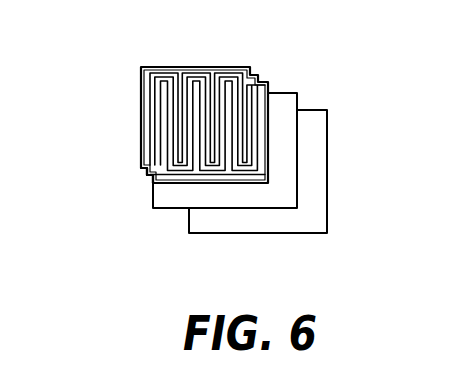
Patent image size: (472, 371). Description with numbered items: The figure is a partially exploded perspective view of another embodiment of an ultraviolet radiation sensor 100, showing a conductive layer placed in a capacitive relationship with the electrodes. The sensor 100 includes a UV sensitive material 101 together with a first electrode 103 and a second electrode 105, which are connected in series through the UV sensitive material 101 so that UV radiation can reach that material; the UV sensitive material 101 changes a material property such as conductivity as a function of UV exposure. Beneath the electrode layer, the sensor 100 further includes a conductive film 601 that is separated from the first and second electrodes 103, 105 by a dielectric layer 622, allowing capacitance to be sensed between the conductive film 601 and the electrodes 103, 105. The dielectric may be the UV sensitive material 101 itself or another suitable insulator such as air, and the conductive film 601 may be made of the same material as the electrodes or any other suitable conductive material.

The ultraviolet radiation sensor 100 is at (314, 49).
The UV sensitive material 101 is at (141, 168).
The first electrode 103 is at (141, 142).
The second electrode 105 is at (150, 172).
The conductive film 601 is at (316, 130).
The dielectric layer 622 is at (294, 93).